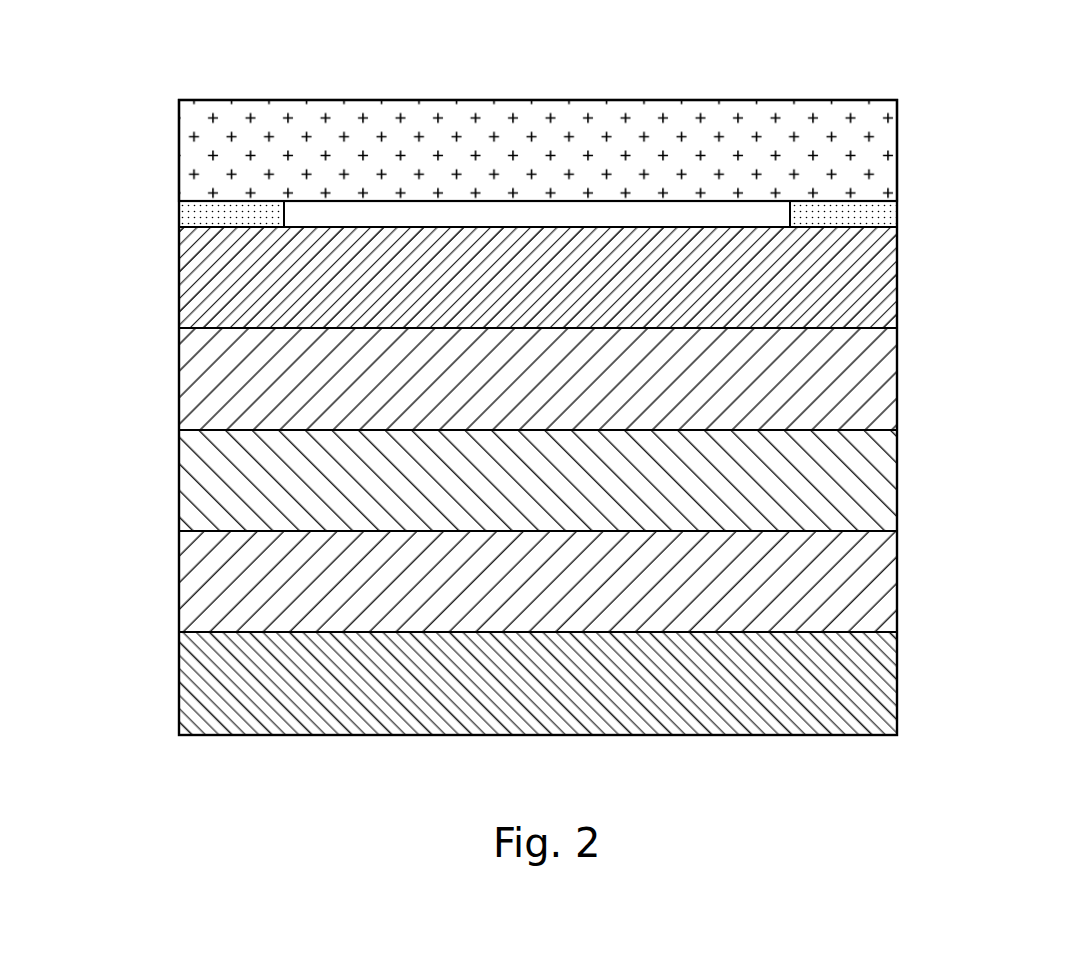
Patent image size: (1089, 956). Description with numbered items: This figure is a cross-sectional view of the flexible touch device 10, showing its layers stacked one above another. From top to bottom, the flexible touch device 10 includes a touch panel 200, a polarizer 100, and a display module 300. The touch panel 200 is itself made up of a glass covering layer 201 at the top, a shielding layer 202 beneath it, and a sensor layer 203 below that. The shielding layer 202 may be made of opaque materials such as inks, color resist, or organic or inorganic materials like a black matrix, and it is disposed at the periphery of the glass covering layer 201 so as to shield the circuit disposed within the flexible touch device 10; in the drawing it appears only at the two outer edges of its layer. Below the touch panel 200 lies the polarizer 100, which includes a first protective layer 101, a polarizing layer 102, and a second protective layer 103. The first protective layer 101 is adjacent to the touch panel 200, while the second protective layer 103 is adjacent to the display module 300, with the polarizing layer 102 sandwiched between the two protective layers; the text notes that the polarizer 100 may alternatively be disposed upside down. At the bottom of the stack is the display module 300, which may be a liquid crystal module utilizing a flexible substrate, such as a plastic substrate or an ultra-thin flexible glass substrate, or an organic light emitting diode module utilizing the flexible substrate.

The flexible touch device 10 is at (97, 72).
The touch panel 200 is at (631, 214).
The glass covering layer 201 is at (872, 155).
The shielding layer 202 is at (872, 218).
The sensor layer 203 is at (595, 277).
The polarizer 100 is at (631, 480).
The first protective layer 101 is at (872, 378).
The polarizing layer 102 is at (872, 480).
The second protective layer 103 is at (595, 581).
The display module 300 is at (872, 683).